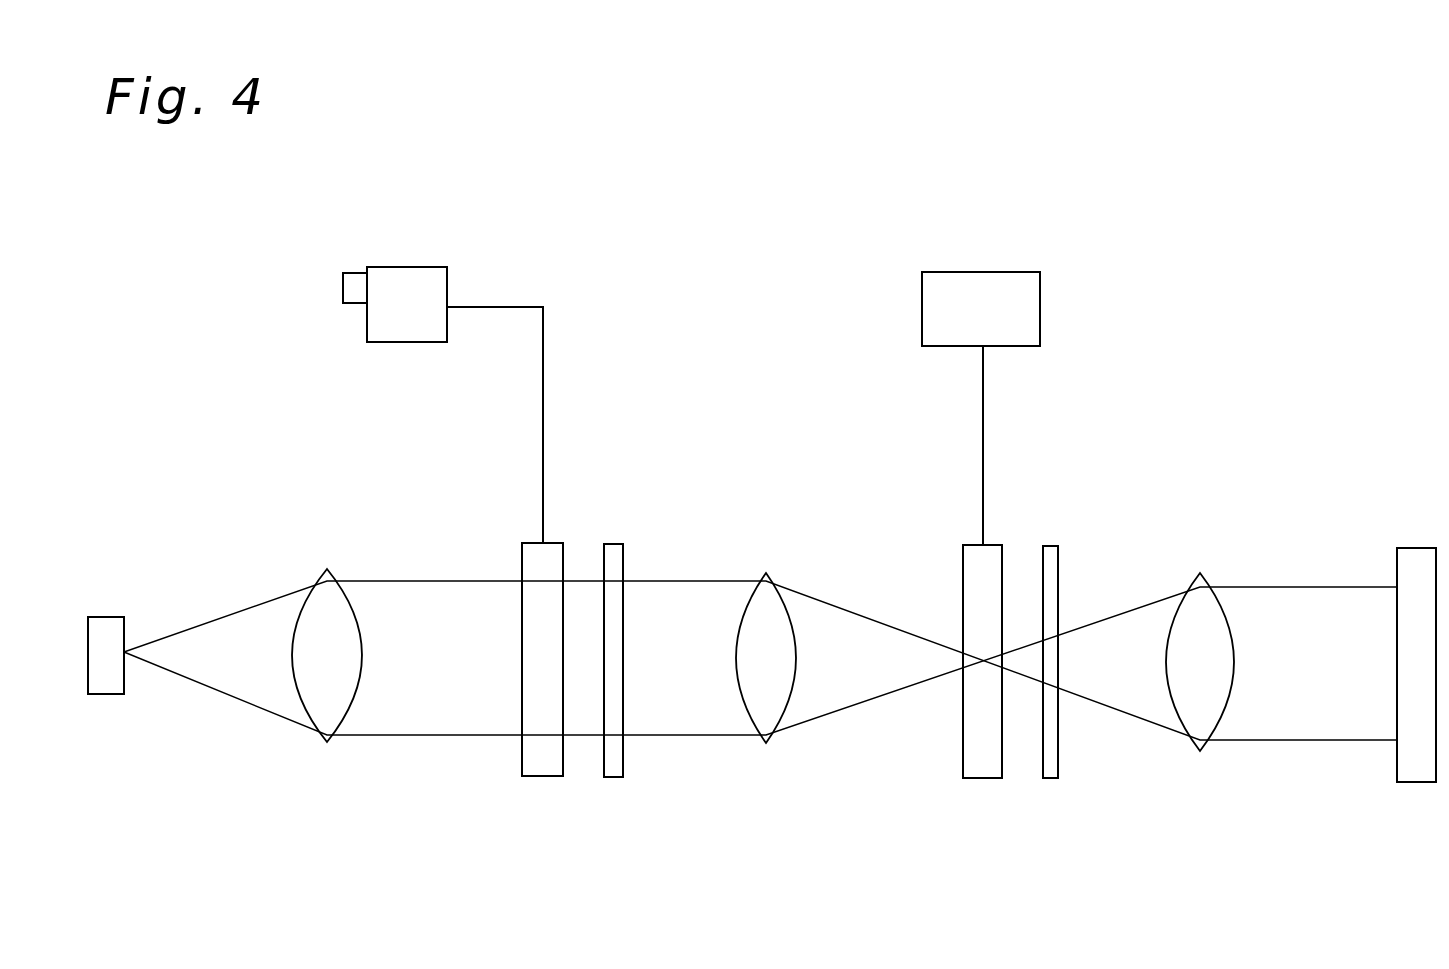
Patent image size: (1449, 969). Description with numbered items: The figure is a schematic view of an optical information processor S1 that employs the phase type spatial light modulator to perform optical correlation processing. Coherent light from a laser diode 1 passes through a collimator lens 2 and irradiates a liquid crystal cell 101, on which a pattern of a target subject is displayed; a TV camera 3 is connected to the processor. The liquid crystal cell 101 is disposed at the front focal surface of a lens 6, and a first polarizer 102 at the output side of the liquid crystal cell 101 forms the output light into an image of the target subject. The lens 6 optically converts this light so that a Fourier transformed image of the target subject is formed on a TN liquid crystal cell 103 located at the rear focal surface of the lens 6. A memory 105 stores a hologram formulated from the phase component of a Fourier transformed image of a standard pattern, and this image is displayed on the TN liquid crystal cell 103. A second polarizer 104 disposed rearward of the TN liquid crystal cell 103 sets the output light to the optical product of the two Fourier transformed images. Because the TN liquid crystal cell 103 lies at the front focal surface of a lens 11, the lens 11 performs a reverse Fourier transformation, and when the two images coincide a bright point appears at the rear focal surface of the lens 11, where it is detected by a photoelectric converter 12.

The optical information processor S1 is at (690, 257).
The laser diode 1 is at (103, 694).
The collimator lens 2 is at (320, 742).
The TV camera 3 is at (402, 342).
The lens 6 is at (760, 743).
The lens 11 is at (1207, 751).
The photoelectric converter 12 is at (1420, 782).
The liquid crystal cell 101 is at (540, 776).
The first polarizer 102 is at (612, 777).
The TN liquid crystal cell 103 is at (982, 778).
The second polarizer 104 is at (1048, 778).
The memory 105 is at (1040, 310).